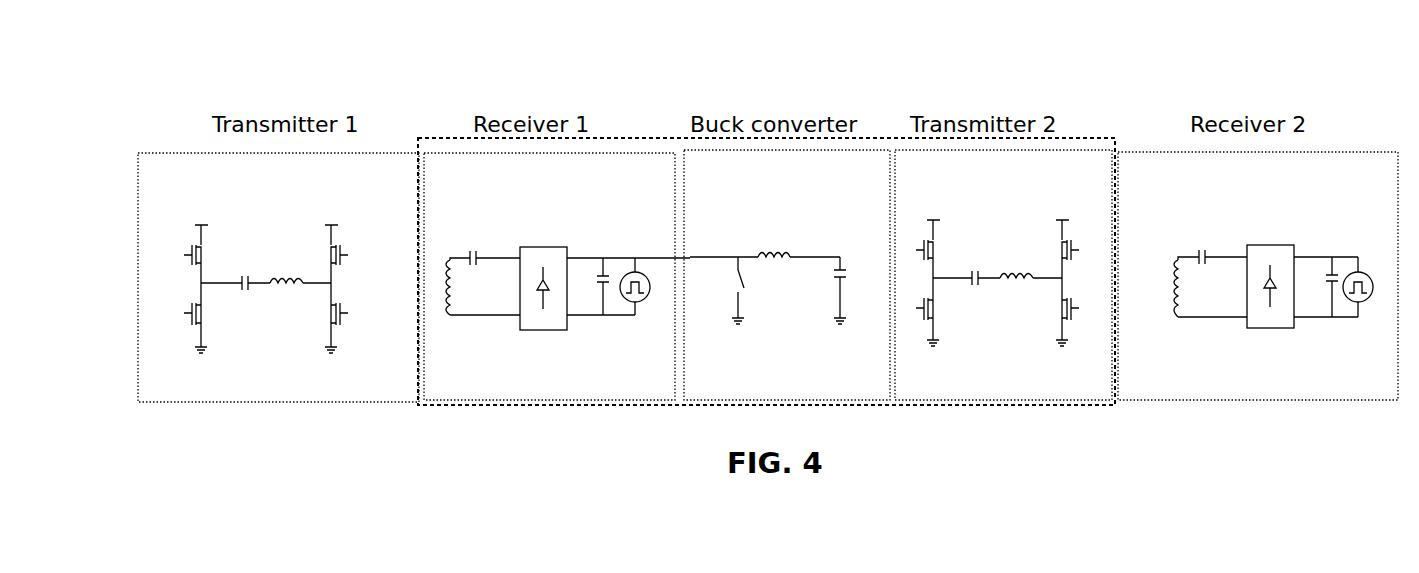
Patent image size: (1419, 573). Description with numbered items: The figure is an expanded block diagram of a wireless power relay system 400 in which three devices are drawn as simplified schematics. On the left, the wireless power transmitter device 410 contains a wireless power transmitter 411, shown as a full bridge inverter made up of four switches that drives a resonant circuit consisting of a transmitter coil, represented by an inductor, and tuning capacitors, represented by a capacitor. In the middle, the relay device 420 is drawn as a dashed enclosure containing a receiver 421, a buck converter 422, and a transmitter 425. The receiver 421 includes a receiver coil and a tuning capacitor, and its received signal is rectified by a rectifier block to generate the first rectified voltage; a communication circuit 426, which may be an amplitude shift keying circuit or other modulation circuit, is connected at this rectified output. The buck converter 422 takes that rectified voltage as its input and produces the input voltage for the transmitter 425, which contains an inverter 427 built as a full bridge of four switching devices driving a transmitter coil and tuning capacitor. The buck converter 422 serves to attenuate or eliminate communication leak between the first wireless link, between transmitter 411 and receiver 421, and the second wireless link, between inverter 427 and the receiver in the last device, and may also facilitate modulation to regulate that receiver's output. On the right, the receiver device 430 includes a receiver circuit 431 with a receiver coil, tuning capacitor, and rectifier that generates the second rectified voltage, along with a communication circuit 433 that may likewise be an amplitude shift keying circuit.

The wireless power relay system 400 is at (908, 68).
The wireless power transmitter device 1 410 is at (372, 405).
The wireless power transmitter 411 is at (268, 215).
The relay Device 2 420 is at (645, 138).
The receiver 421 is at (535, 218).
The buck converter 422 is at (795, 218).
The transmitter 425 is at (1000, 405).
The communication circuit 426 is at (645, 258).
The inverter 427 is at (983, 210).
The receiver Device 3 430 is at (1253, 402).
The receiver circuit 431 is at (1245, 218).
The communication circuit 433 is at (1370, 272).